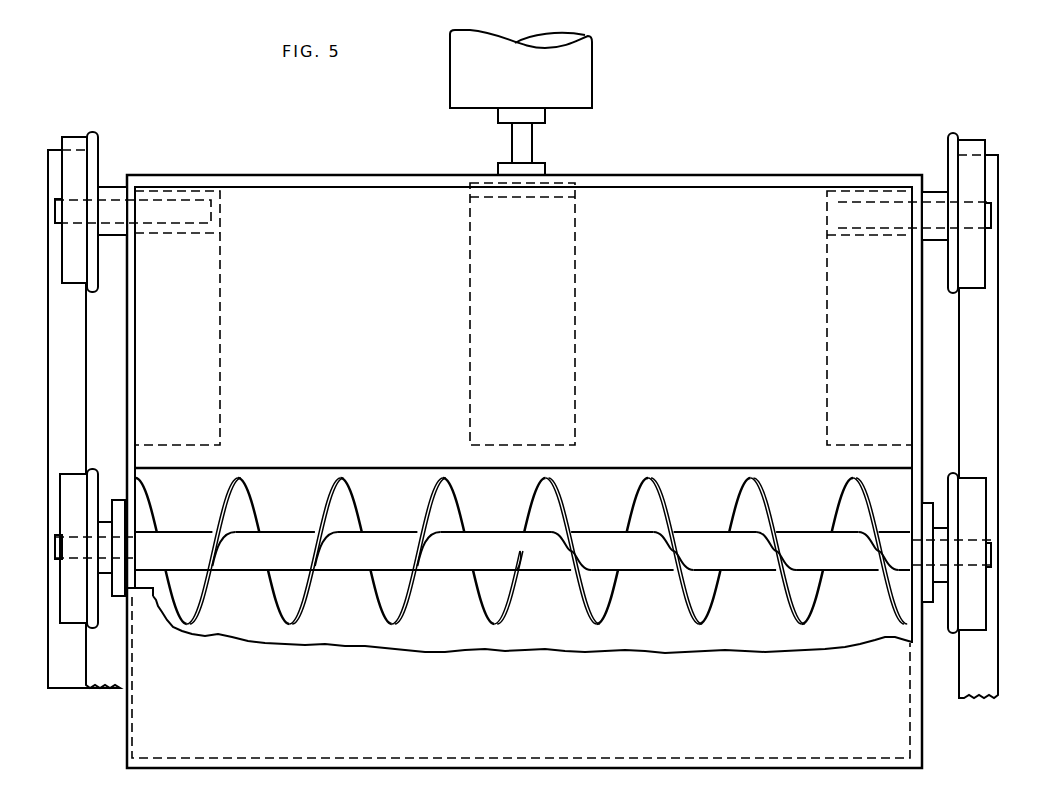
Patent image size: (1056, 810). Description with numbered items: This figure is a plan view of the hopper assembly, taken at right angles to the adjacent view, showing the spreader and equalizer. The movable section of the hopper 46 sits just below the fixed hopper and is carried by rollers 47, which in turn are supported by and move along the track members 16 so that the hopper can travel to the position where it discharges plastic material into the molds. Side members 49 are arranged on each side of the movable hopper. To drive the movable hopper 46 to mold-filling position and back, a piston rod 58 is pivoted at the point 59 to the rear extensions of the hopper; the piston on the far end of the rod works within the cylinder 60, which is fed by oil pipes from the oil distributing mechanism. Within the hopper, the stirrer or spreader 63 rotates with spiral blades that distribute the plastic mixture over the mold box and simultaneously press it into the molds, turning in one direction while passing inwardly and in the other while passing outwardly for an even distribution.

The track members 16 is at (48, 344).
The movable section of the hopper 46 is at (898, 727).
The rollers 47 is at (72, 137).
The side members 49 is at (724, 175).
The piston rod 58 is at (533, 143).
The pivot point 59 is at (55, 210).
The cylinder 60 is at (592, 70).
The stirrer or spreader 63 is at (488, 537).